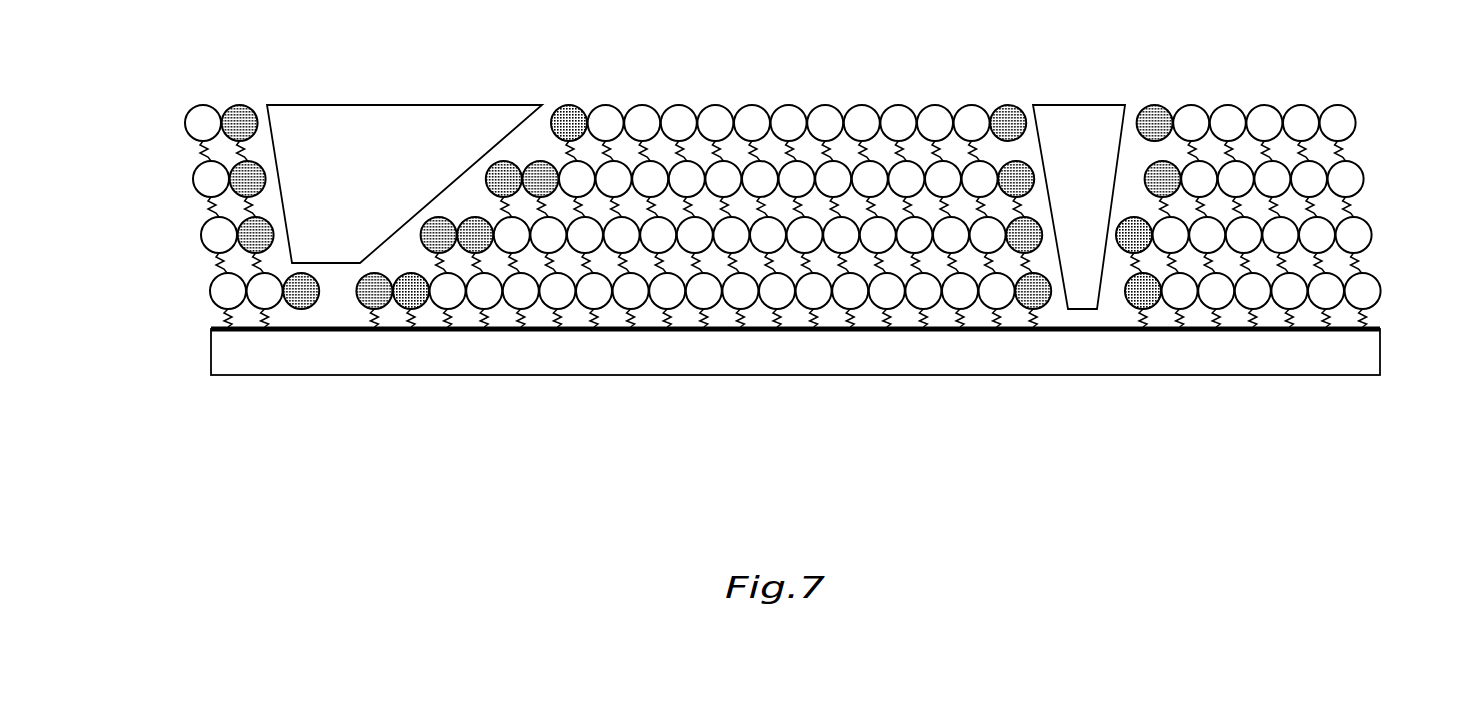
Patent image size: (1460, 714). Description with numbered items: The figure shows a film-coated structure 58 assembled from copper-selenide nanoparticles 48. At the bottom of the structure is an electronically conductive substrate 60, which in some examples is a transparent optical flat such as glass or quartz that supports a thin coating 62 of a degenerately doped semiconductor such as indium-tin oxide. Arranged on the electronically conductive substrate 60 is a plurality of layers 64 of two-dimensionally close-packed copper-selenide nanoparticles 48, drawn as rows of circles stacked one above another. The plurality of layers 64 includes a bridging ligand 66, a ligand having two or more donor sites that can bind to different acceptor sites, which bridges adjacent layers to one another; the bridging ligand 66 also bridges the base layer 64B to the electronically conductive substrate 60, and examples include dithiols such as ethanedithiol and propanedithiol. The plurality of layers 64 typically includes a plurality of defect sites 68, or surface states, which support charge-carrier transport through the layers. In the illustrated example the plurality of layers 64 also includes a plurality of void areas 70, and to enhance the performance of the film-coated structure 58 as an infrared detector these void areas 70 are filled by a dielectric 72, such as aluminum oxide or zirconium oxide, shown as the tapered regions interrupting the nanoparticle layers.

The copper-selenide nanoparticles 48 is at (593, 185).
The film-coated structure 58 is at (113, 107).
The electronically conductive substrate 60 is at (810, 362).
The thin coating 62 is at (350, 335).
The plurality of layers 64 is at (1440, 185).
The base layer 64B is at (198, 291).
The bridging ligand 66 is at (206, 209).
The defect sites 68 is at (553, 103).
The void areas 70 is at (480, 208).
The dielectric 72 is at (390, 177).